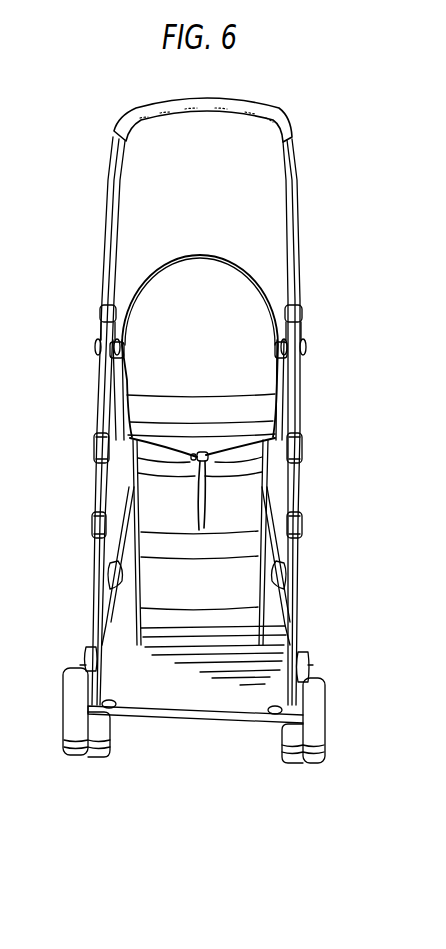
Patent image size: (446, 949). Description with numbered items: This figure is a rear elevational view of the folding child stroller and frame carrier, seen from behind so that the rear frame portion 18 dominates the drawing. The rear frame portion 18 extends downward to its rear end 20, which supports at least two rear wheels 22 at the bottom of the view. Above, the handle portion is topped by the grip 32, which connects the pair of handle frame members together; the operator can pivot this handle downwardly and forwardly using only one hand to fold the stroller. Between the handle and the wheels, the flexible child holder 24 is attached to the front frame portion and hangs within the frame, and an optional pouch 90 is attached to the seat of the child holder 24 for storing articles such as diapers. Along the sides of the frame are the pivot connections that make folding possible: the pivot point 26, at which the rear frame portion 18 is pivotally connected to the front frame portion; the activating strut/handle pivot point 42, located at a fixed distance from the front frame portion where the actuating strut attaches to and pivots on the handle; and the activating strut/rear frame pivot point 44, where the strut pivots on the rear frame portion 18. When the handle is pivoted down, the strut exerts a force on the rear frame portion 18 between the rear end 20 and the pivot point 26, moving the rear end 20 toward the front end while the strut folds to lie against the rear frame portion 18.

The rear frame portion 18 is at (297, 597).
The rear end 20 is at (217, 718).
The rear wheels 22 is at (317, 738).
The flexible child holder 24 is at (213, 268).
The pivot point 26 is at (303, 448).
The grip 32 is at (242, 102).
The activating strut/handle pivot point 42 is at (300, 327).
The activating strut/rear frame pivot point 44 is at (300, 526).
The pouch 90 is at (242, 618).